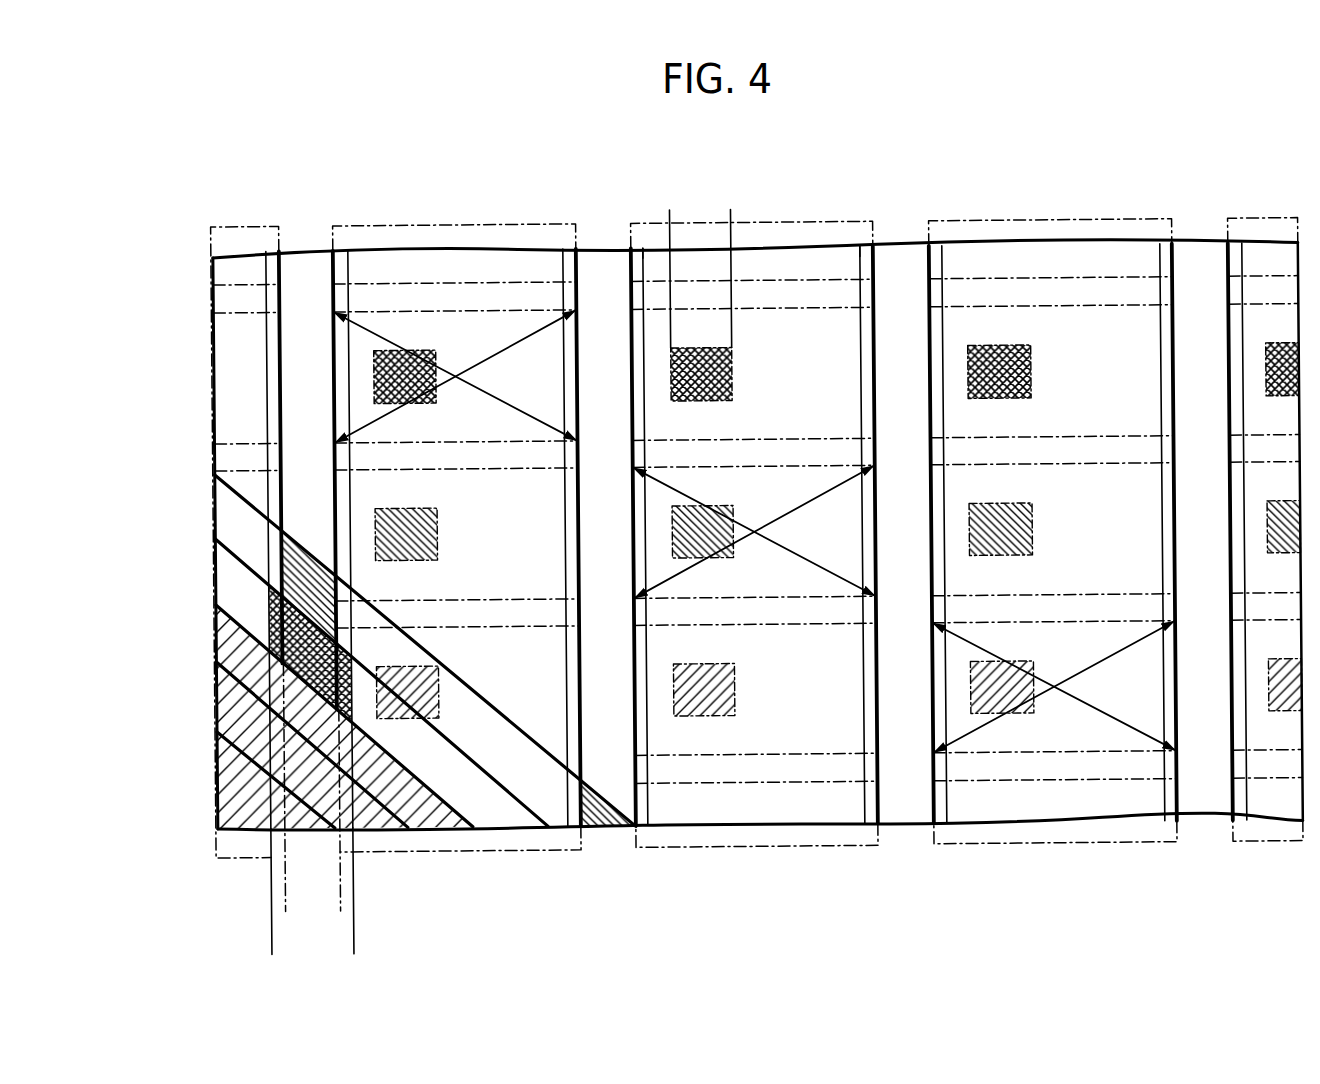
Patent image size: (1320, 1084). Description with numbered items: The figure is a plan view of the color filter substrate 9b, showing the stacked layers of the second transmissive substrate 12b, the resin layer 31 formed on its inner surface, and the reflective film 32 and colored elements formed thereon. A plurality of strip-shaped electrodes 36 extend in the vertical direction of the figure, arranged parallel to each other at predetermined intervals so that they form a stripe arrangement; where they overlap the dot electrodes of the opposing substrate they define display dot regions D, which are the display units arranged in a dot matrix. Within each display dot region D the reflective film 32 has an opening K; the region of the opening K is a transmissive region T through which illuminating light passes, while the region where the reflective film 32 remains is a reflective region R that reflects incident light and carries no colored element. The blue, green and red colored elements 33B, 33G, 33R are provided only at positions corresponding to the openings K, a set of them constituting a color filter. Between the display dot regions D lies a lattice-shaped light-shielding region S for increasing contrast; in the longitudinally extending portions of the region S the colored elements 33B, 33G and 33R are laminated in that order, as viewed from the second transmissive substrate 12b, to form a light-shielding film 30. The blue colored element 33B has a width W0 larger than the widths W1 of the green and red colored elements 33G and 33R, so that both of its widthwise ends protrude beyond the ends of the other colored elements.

The color filter substrate 9b is at (193, 204).
The strip-shaped electrodes 36 is at (437, 226).
The light-shielding region S is at (205, 278).
The reflective region R is at (862, 169).
The transmissive region T is at (733, 209).
The blue colored element 33B is at (265, 641).
The green colored element 33G is at (300, 576).
The red colored element 33R is at (303, 514).
The opening K is at (419, 403).
The display dot region D is at (519, 340).
The light-shielding film 30 is at (135, 654).
The reflective film 32 is at (240, 672).
The resin layer 31 is at (258, 741).
The second transmissive substrate 12b is at (260, 794).
The width of the green and red colored elements W1 is at (335, 900).
The width of the blue colored element W0 is at (347, 942).